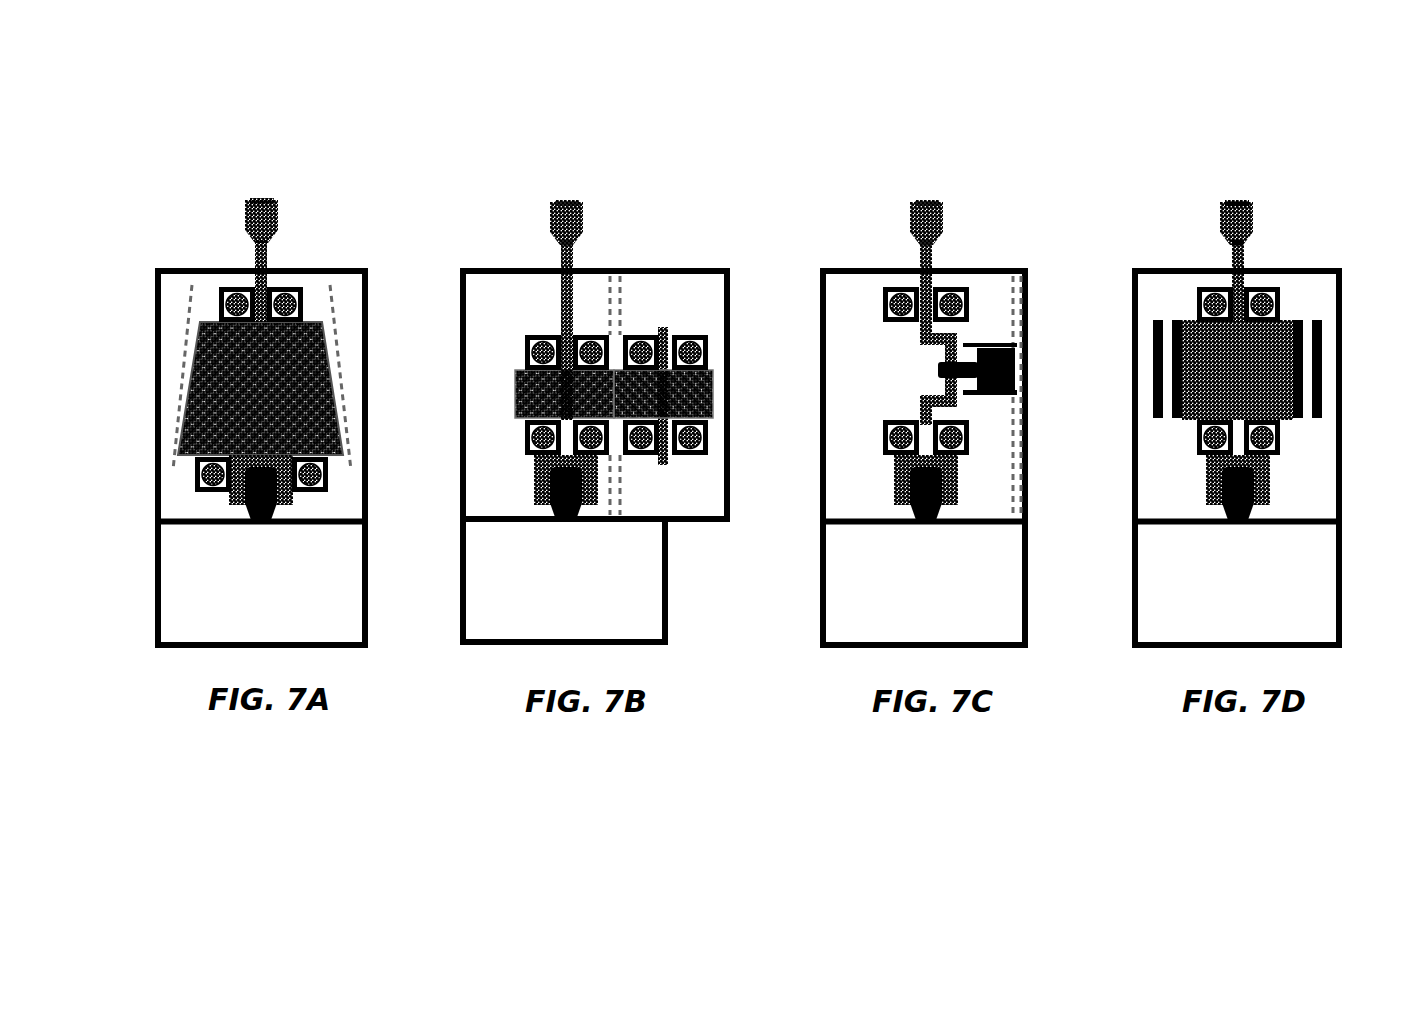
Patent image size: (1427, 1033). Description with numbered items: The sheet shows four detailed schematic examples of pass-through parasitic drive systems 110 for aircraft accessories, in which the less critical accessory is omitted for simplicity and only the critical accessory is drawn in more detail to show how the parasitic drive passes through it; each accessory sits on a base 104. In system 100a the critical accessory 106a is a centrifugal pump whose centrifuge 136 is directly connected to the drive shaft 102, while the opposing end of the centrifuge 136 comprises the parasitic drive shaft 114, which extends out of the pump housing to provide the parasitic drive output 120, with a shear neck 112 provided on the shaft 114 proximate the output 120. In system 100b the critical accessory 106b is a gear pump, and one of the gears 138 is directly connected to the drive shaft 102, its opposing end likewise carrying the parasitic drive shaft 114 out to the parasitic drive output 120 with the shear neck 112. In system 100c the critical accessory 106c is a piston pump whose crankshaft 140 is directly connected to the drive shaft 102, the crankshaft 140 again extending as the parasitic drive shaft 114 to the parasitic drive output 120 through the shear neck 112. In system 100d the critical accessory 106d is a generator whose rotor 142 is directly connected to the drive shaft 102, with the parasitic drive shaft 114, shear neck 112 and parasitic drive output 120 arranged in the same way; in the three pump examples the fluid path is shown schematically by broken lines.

In FIG. 7A, the system 100a is at (256, 418).
In FIG. 7B, the system 100b is at (592, 390).
In FIG. 7C, the system 100c is at (921, 384).
In FIG. 7D, the system 100d is at (1239, 391).
In FIG. 7A, the drive shaft 102 is at (218, 490).
In FIG. 7B, the drive shaft 102 is at (560, 505).
In FIG. 7C, the drive shaft 102 is at (922, 512).
In FIG. 7D, the drive shaft 102 is at (1236, 495).
In FIG. 7A, the substrate 104 is at (297, 606).
In FIG. 7B, the substrate 104 is at (605, 617).
In FIG. 7C, the substrate 104 is at (950, 590).
In FIG. 7D, the substrate 104 is at (1262, 600).
In FIG. 7A, the critical accessory 106a is at (168, 370).
In FIG. 7B, the critical accessory 106b is at (668, 487).
In FIG. 7C, the critical accessory 106c is at (872, 370).
In FIG. 7D, the critical accessory 106d is at (1318, 462).
In FIG. 7A, the pass-through parasitic drive system 110 is at (258, 200).
In FIG. 7B, the pass-through parasitic drive system 110 is at (567, 202).
In FIG. 7C, the pass-through parasitic drive system 110 is at (928, 202).
In FIG. 7D, the pass-through parasitic drive system 110 is at (1238, 202).
In FIG. 7A, the shear neck 112 is at (258, 250).
In FIG. 7B, the shear neck 112 is at (560, 250).
In FIG. 7C, the shear neck 112 is at (920, 250).
In FIG. 7D, the shear neck 112 is at (1236, 252).
In FIG. 7A, the parasitic drive shaft 114 is at (253, 288).
In FIG. 7B, the parasitic drive shaft 114 is at (560, 305).
In FIG. 7C, the parasitic drive shaft 114 is at (925, 278).
In FIG. 7D, the parasitic drive shaft 114 is at (1210, 288).
In FIG. 7A, the parasitic drive output 120 is at (258, 215).
In FIG. 7B, the parasitic drive output 120 is at (588, 218).
In FIG. 7C, the parasitic drive output 120 is at (920, 222).
In FIG. 7D, the parasitic drive output 120 is at (1238, 215).
In FIG. 7A, the centrifuge 136 is at (218, 405).
In FIG. 7B, the gear 138 is at (528, 388).
In FIG. 7C, the crankshaft 140 is at (946, 392).
In FIG. 7D, the rotor 142 is at (1220, 380).